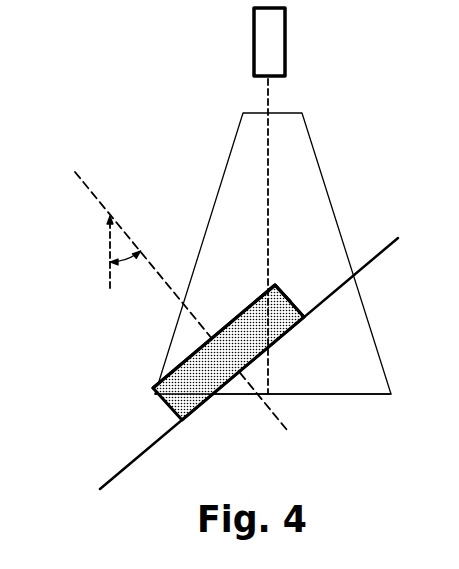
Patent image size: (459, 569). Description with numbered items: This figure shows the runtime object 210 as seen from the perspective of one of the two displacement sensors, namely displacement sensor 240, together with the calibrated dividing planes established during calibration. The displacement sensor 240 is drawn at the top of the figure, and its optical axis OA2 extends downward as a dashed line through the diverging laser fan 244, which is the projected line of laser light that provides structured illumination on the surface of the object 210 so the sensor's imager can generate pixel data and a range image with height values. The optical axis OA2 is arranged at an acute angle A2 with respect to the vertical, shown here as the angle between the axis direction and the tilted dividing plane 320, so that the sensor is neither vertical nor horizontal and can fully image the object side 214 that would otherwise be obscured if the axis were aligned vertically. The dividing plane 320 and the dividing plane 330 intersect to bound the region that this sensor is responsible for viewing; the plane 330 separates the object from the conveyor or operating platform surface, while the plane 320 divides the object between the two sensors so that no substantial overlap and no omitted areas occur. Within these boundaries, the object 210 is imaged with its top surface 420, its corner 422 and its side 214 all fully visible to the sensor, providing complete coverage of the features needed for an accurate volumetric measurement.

The displacement sensor 240 is at (288, 37).
The optical axis OA2 is at (268, 98).
The laser fan 244 is at (315, 158).
The vertical dividing plane 320 is at (75, 172).
The angle A2 is at (121, 282).
The runtime object 210 is at (236, 325).
The top surface 420 is at (210, 330).
The corner 422 is at (277, 281).
The object side 214 is at (296, 298).
The horizontal dividing plane 330 is at (118, 467).